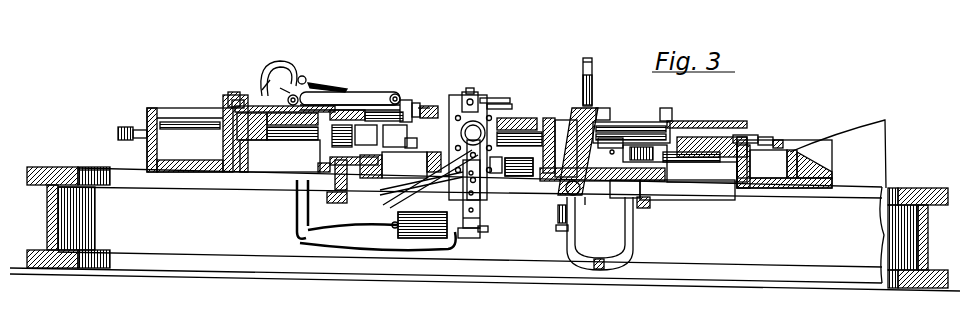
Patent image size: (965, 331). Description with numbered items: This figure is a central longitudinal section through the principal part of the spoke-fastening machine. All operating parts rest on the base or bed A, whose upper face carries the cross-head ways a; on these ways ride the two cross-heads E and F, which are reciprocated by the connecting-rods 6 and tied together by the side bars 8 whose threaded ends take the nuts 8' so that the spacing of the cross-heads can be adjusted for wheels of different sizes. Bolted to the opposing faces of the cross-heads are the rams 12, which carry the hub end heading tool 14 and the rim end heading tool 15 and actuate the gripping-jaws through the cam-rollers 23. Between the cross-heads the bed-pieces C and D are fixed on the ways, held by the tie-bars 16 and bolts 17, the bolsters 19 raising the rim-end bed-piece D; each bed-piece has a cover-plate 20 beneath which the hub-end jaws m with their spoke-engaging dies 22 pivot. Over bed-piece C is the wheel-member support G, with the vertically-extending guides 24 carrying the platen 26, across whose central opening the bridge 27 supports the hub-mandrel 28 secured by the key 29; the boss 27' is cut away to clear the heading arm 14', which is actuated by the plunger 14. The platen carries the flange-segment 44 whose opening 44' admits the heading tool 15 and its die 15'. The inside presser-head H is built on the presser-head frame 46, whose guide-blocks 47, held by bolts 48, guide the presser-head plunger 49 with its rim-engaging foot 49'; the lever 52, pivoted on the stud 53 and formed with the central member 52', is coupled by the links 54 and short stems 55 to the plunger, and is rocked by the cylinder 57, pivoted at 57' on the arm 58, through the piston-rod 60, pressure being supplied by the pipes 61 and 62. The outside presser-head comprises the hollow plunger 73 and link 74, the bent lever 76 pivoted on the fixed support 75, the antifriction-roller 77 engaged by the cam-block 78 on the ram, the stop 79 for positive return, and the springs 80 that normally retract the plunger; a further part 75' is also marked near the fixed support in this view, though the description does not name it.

The base or bed A is at (200, 218).
The cross-head ways a is at (110, 170).
The connecting-rods 6 is at (126, 127).
The side bars 8 is at (132, 145).
The cross-head E is at (205, 146).
The stop 79 is at (231, 95).
The cam-block 78 is at (244, 98).
The rams 12 is at (487, 148).
The bent lever 76 is at (290, 66).
The fixed support 75 is at (308, 69).
The antifriction-roller 77 is at (288, 101).
The springs 80 is at (322, 84).
The rim end heading tool 15 is at (350, 87).
The die 15' is at (350, 93).
The hollow plunger 73 is at (396, 94).
The link 74 is at (406, 100).
The pin 75' is at (428, 85).
The rim-engaging depending foot 49' is at (432, 88).
The flange-segment 44 is at (426, 102).
The guide-blocks 47 is at (480, 99).
The cover-plate 20 is at (350, 108).
The bolsters 19 is at (326, 166).
The cam-rollers 23 is at (476, 152).
The hub-end gripping-jaws m is at (354, 136).
The spoke-engaging dies 22 is at (400, 140).
The opening 44' is at (402, 149).
The bed-piece D is at (400, 165).
The bolts 17 is at (487, 179).
The tie-bars 16 is at (347, 202).
The pipe 62 is at (350, 230).
The cylinder 57 is at (475, 238).
The pipe 61 is at (458, 242).
The piston-rod 60 is at (471, 235).
The pivotal mounting 57' is at (496, 229).
The lever 52 is at (514, 194).
The central member 52' is at (483, 218).
The stud 53 is at (556, 229).
The arm 58 is at (406, 190).
The inside presser-head H is at (490, 85).
The bolts 48 is at (472, 90).
The presser-head plunger 49 is at (506, 109).
The links 54 is at (519, 131).
The presser-head frame 46 is at (496, 173).
The short stems 55 is at (517, 176).
The wheel-member support G is at (588, 58).
The key 29 is at (592, 66).
The hub-mandrel 28 is at (592, 88).
The central boss 27' is at (612, 107).
The bridge 27 is at (631, 124).
The vertically-extending guides 24 is at (600, 233).
The bolt x is at (597, 264).
The pin o is at (612, 154).
The arm 14' is at (629, 159).
The bed-piece C is at (637, 184).
The hub end heading tool 14 is at (712, 144).
The platen 26 is at (745, 135).
The nuts 8' is at (769, 132).
The cross-head F is at (785, 162).